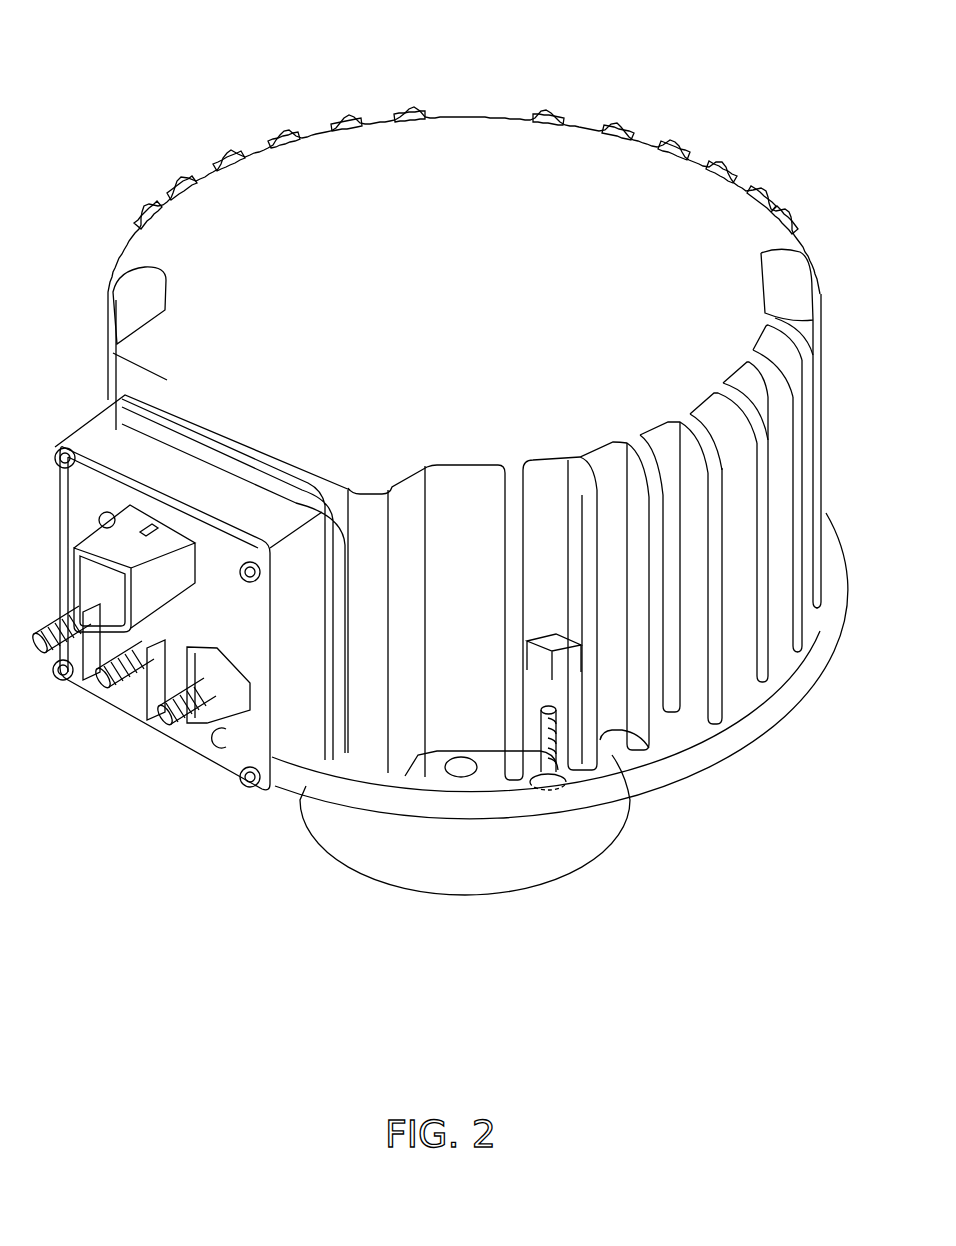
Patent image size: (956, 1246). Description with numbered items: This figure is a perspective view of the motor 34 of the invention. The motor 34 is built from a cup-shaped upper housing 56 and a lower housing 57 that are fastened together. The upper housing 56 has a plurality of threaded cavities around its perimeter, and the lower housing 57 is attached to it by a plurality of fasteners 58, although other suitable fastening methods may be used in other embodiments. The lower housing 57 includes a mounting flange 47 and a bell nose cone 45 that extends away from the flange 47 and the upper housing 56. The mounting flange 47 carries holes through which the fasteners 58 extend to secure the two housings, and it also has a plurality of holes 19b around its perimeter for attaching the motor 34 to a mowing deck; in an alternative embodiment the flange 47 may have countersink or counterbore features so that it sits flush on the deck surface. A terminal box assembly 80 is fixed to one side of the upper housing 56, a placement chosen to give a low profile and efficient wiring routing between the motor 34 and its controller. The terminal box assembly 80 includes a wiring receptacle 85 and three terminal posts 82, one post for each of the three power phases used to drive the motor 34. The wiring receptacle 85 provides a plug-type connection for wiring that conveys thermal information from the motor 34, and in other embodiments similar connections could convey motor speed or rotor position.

The motor 34 is at (112, 62).
The upper housing 56 is at (478, 297).
The lower housing 57 is at (795, 688).
The mounting flange 47 is at (672, 783).
The bell nose cone 45 is at (475, 884).
The holes 19b is at (462, 768).
The fasteners 58 is at (556, 745).
The terminal box assembly 80 is at (98, 743).
The wiring receptacle 85 is at (100, 548).
The terminal posts 82 is at (40, 646).